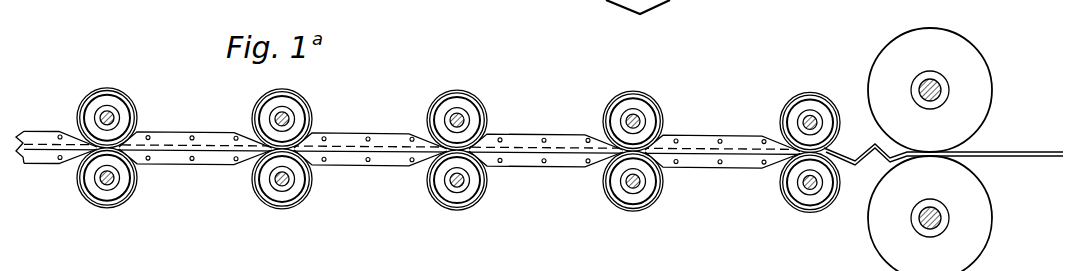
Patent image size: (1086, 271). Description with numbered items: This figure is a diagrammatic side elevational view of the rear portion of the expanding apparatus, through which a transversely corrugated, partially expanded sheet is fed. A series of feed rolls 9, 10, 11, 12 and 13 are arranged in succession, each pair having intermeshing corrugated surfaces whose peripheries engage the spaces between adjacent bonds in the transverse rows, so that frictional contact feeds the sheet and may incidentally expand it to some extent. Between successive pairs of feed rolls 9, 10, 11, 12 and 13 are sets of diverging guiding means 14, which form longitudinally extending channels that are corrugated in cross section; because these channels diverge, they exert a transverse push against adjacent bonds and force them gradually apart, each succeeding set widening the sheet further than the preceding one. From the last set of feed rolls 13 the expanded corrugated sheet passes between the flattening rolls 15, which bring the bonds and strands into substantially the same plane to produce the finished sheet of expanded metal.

The feed rolls 9 is at (122, 97).
The feed rolls 10 is at (304, 105).
The feed rolls 11 is at (480, 104).
The feed rolls 12 is at (659, 106).
The feed rolls 13 is at (820, 101).
The diverging guiding means 14 is at (192, 129).
The flattening rolls 15 is at (965, 62).